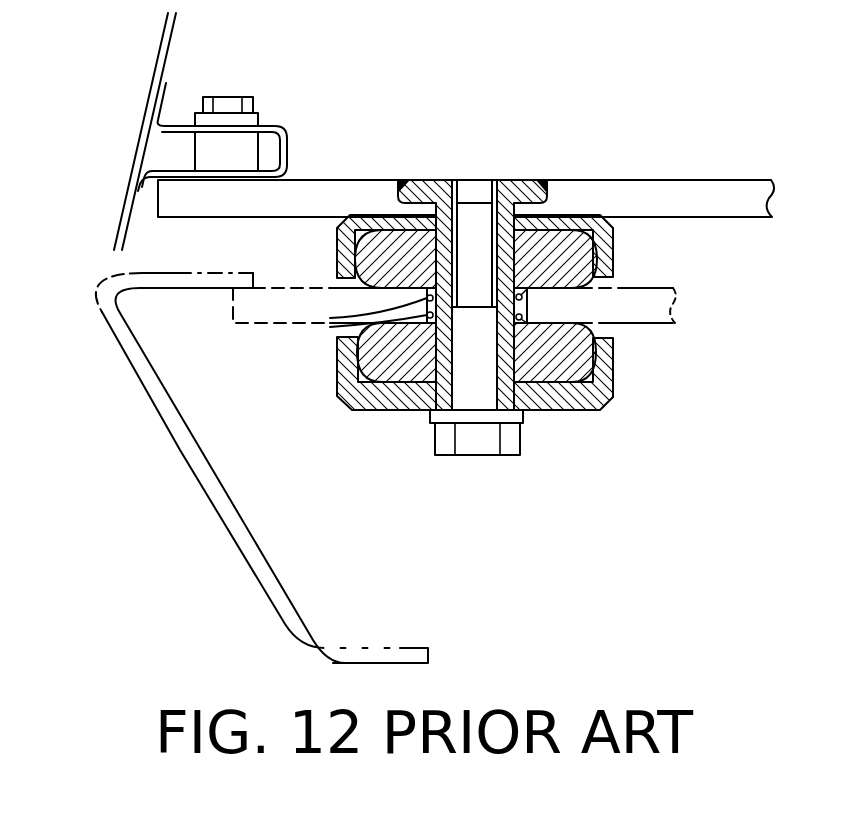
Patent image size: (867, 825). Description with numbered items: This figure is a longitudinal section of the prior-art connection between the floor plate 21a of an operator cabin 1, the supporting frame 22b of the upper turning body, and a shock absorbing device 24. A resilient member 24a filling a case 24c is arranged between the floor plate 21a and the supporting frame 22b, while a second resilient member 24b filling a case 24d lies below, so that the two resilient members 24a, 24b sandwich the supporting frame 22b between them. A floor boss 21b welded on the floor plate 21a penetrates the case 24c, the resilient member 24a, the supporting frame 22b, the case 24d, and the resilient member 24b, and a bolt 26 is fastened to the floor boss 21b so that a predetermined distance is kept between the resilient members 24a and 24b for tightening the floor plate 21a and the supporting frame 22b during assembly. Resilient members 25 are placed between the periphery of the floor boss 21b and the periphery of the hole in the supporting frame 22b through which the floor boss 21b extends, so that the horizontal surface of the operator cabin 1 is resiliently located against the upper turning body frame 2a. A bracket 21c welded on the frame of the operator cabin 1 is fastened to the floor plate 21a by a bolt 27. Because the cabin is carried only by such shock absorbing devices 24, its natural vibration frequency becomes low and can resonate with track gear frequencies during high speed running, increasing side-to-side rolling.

The operator cabin 1 is at (147, 134).
The upper turning body frame 2a is at (142, 390).
The floor plate 21a is at (619, 180).
The floor boss 21b is at (520, 180).
The bracket 21c is at (288, 137).
The supporting frame 22b is at (287, 324).
The shock absorbing device 24 is at (543, 348).
The resilient member 24a is at (613, 270).
The resilient member 24b is at (613, 376).
The case 24c is at (613, 240).
The case 24d is at (607, 395).
The resilient members 25 is at (330, 322).
The bolt 26 is at (500, 457).
The bolt 27 is at (242, 96).